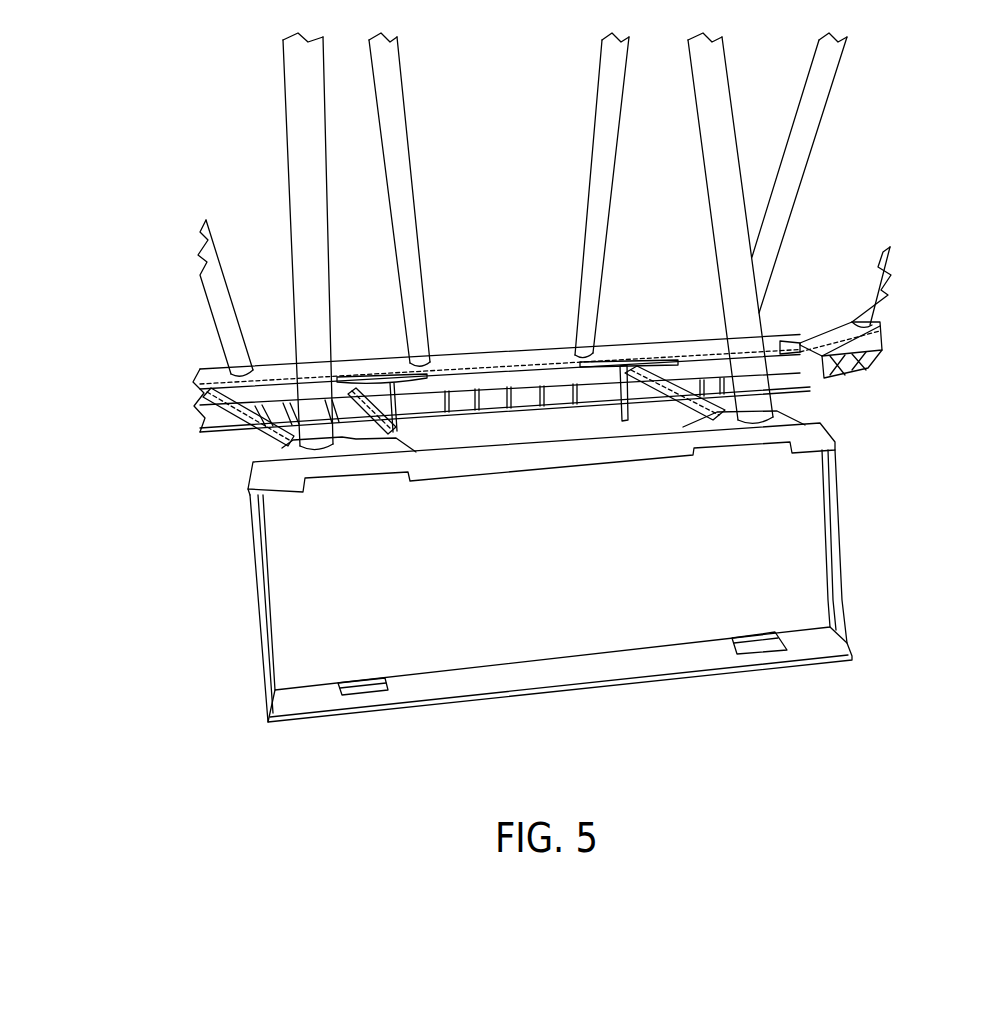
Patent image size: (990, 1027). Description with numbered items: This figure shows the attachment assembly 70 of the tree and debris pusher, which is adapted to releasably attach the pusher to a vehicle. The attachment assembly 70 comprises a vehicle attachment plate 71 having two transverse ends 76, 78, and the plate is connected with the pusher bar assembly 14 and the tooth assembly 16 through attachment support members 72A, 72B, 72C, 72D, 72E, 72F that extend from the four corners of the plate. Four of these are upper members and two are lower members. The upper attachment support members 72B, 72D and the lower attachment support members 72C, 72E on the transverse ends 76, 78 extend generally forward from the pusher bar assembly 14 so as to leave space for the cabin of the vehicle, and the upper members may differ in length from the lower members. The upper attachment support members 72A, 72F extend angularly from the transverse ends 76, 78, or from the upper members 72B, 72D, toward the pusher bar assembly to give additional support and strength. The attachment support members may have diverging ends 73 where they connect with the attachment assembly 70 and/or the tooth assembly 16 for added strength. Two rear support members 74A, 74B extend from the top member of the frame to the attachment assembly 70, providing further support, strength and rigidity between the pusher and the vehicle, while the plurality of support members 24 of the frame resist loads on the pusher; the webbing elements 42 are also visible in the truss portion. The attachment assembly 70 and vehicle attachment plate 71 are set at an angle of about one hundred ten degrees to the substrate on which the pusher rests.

The pusher bar assembly 14 is at (557, 342).
The tooth assembly 16 is at (850, 387).
The support members 24 is at (594, 118).
The web members 42 is at (575, 410).
The attachment assembly 70 is at (250, 476).
The vehicle attachment plate 71 is at (285, 573).
The upper attachment support member 72A is at (212, 410).
The upper attachment support member 72B is at (423, 375).
The lower attachment support member 72C is at (397, 443).
The upper attachment support member 72D is at (690, 382).
The lower attachment support member 72E is at (628, 422).
The upper attachment support member 72F is at (800, 343).
The diverging ends 73 is at (368, 362).
The rear support member 74A is at (284, 76).
The rear support member 74B is at (727, 133).
The transverse end 76 is at (255, 615).
The transverse end 78 is at (833, 445).